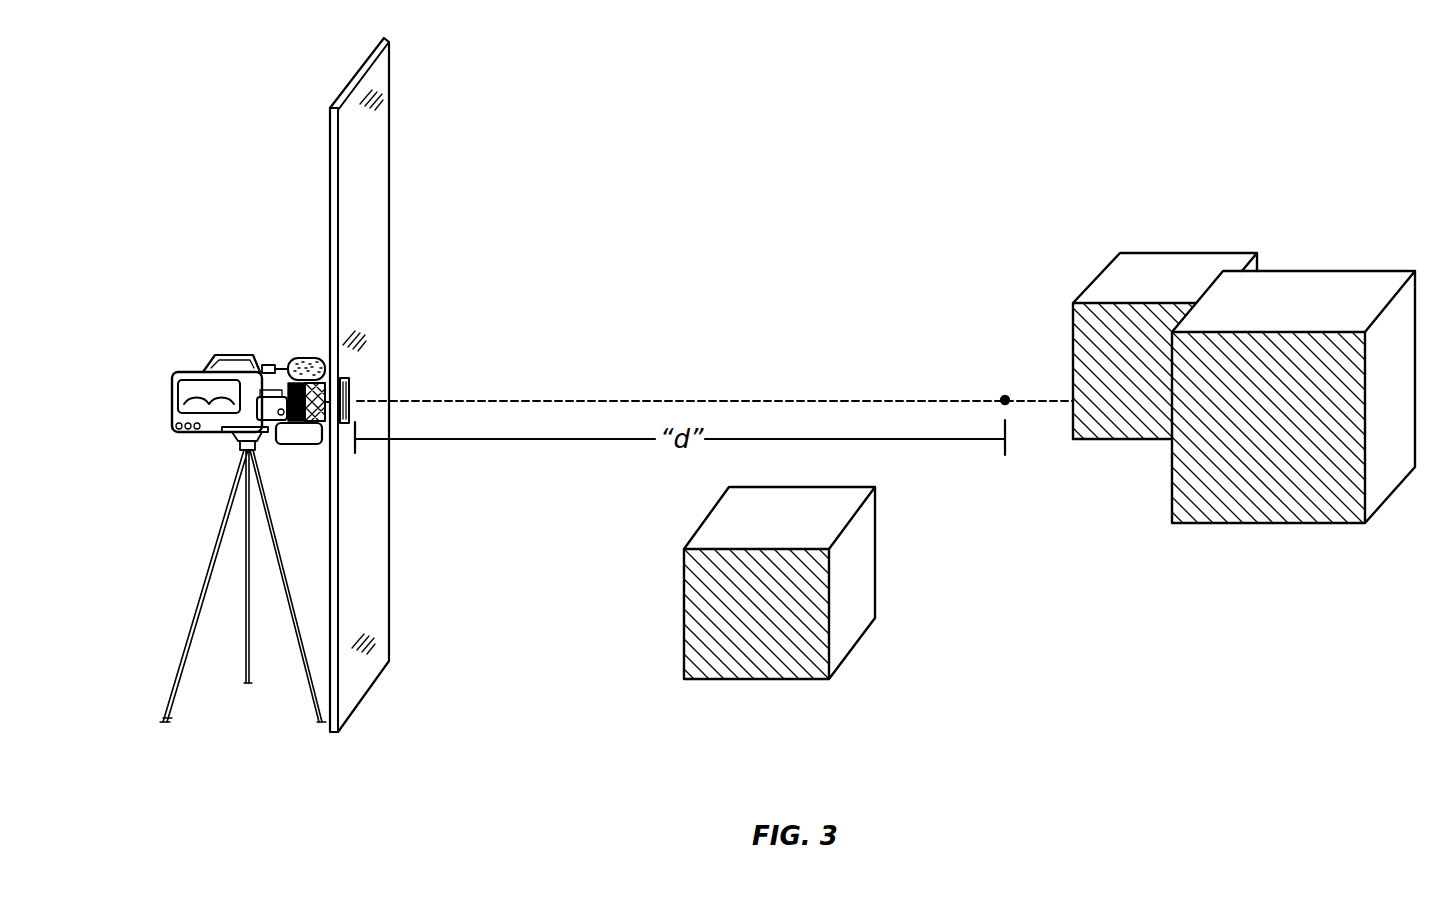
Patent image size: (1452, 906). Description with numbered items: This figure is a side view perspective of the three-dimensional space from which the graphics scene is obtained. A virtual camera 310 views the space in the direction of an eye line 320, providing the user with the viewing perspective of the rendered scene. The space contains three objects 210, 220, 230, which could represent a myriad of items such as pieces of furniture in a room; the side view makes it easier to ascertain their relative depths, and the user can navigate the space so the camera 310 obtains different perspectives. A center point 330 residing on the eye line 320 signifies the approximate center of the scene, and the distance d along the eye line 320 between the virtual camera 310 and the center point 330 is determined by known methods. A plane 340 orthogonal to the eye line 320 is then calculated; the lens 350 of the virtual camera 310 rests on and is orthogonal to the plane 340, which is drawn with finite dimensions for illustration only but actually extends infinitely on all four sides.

The virtual camera 310 is at (210, 345).
The lens 350 is at (318, 372).
The plane 340 is at (350, 78).
The eye line 320 is at (522, 400).
The center point 330 is at (1003, 396).
The 3D object 210 is at (877, 530).
The 3D object 220 is at (1215, 252).
The 3D object 230 is at (1375, 271).